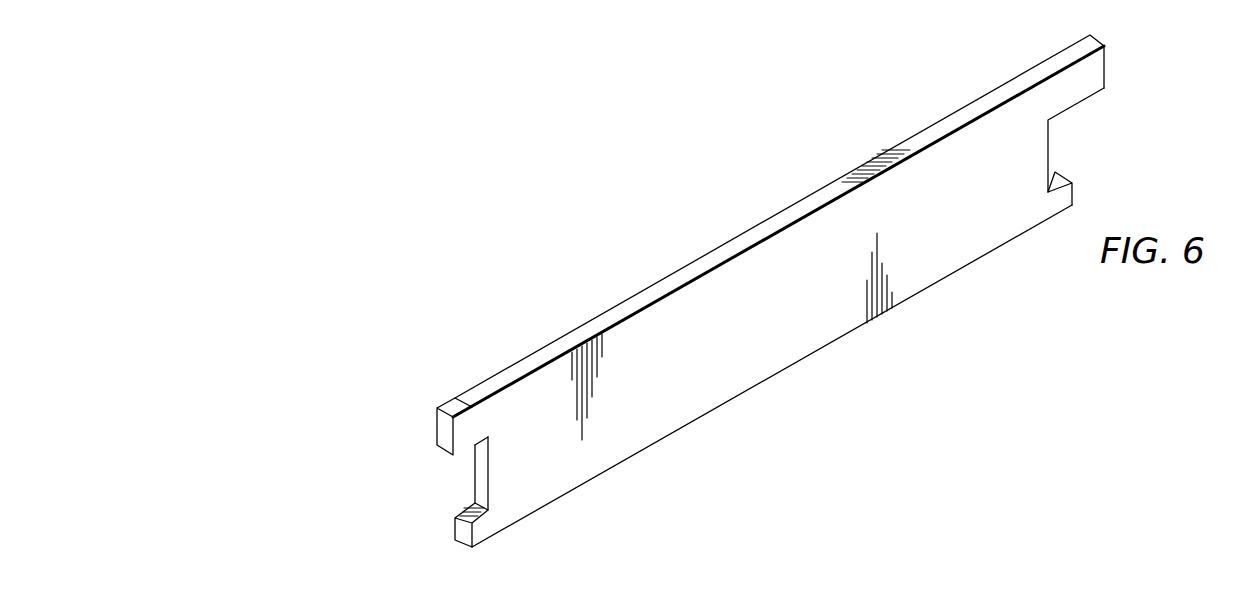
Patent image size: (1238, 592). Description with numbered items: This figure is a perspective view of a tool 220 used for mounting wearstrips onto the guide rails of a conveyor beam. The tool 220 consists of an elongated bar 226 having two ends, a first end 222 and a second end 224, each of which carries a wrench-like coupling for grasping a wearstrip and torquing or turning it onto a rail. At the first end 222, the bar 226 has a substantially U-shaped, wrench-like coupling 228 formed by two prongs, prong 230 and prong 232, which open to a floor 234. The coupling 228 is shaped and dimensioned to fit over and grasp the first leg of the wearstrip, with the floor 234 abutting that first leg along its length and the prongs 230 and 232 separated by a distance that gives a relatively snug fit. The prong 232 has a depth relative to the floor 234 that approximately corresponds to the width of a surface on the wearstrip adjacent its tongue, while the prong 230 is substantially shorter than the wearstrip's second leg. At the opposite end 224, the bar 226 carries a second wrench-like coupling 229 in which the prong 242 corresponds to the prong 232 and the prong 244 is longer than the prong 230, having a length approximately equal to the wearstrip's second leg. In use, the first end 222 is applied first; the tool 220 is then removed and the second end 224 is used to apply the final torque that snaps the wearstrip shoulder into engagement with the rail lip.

The tool 220 is at (687, 266).
The end 222 is at (542, 474).
The end 224 is at (1017, 187).
The bar 226 is at (789, 305).
The coupling 228 is at (467, 482).
The coupling 229 is at (1056, 139).
The prong 230 is at (467, 428).
The prong 232 is at (460, 542).
The floor 234 is at (484, 452).
The prong 242 is at (1061, 194).
The prong 244 is at (1070, 73).